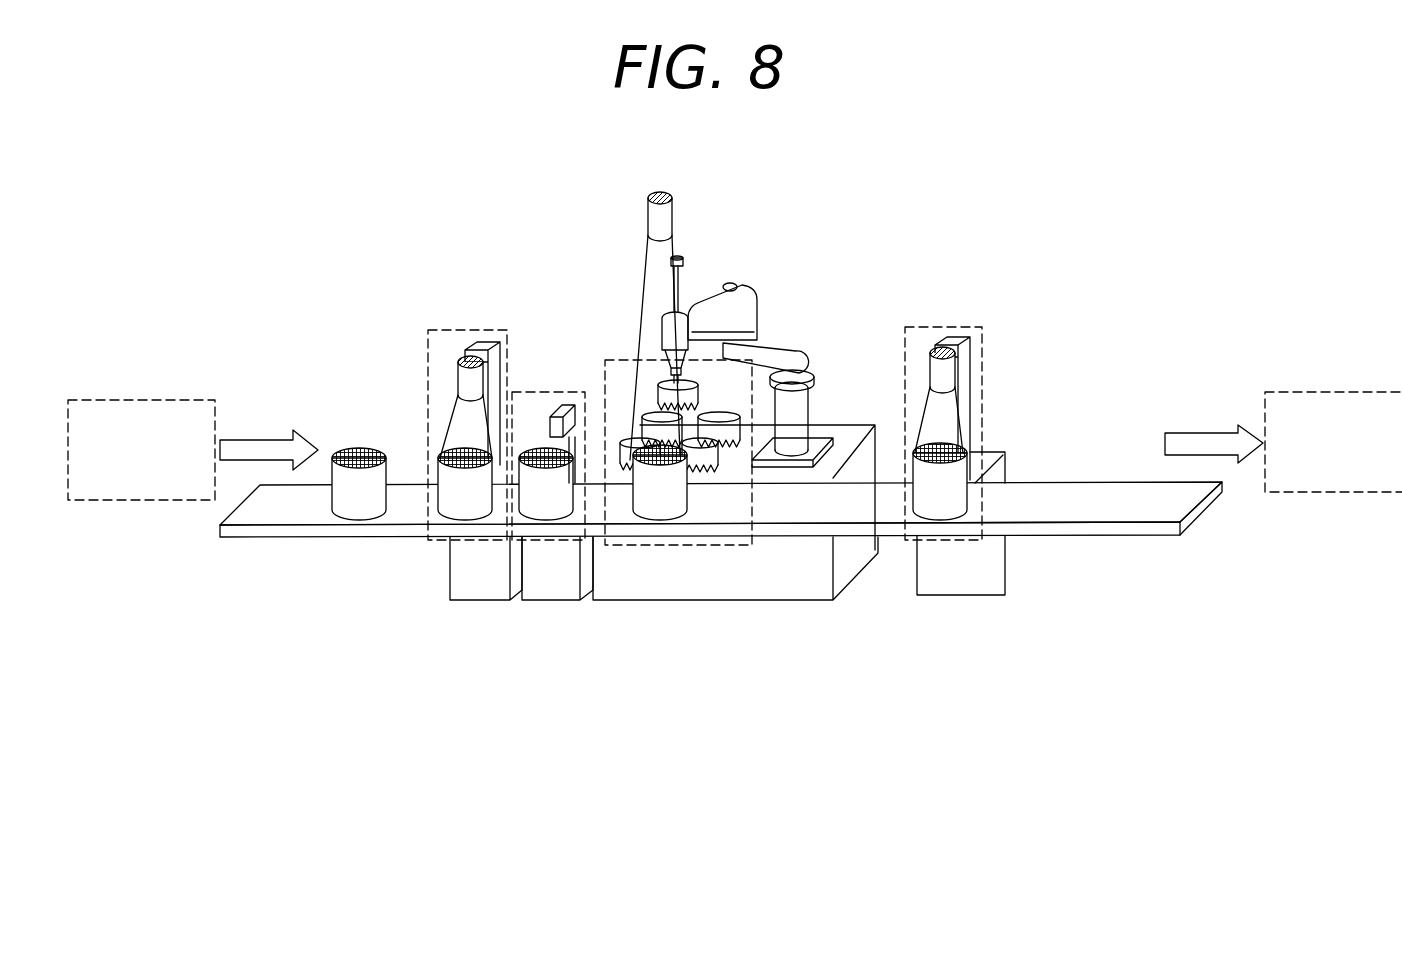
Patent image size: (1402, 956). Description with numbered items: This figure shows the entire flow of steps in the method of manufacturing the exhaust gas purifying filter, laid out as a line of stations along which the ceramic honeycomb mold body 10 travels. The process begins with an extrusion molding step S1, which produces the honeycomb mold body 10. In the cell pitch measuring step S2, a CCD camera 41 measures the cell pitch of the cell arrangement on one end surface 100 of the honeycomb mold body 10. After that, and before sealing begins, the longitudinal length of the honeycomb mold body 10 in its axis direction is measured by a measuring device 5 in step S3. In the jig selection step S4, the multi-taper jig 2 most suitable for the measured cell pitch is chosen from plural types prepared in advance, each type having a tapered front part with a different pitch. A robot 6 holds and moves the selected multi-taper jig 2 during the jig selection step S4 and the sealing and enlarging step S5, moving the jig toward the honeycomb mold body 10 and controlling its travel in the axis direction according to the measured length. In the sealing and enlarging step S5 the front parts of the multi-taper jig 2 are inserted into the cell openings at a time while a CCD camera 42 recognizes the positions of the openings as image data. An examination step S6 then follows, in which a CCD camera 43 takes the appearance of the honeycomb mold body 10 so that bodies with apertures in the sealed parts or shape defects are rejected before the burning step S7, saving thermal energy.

The multi-taper jig 2 is at (662, 377).
The measuring device 5 is at (560, 407).
The robot 6 is at (735, 382).
The honeycomb mold body 10 is at (353, 531).
The CCD camera 41 is at (470, 353).
The CCD camera 42 is at (672, 215).
The CCD camera 43 is at (930, 367).
The end surface 100 is at (467, 478).
The extrusion molding step S1 is at (122, 500).
The cell pitch measuring step S2 is at (455, 384).
The longitudinal length measuring step S3 is at (548, 498).
The jig selection step S4 is at (696, 414).
The sealing and enlarging step S5 is at (696, 414).
The examination step S6 is at (987, 392).
The burning step S7 is at (1360, 390).